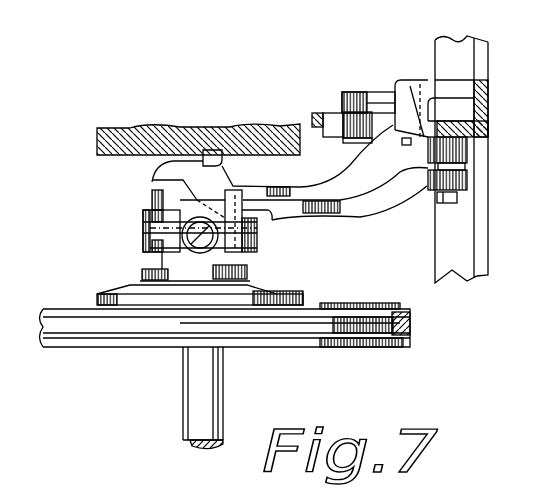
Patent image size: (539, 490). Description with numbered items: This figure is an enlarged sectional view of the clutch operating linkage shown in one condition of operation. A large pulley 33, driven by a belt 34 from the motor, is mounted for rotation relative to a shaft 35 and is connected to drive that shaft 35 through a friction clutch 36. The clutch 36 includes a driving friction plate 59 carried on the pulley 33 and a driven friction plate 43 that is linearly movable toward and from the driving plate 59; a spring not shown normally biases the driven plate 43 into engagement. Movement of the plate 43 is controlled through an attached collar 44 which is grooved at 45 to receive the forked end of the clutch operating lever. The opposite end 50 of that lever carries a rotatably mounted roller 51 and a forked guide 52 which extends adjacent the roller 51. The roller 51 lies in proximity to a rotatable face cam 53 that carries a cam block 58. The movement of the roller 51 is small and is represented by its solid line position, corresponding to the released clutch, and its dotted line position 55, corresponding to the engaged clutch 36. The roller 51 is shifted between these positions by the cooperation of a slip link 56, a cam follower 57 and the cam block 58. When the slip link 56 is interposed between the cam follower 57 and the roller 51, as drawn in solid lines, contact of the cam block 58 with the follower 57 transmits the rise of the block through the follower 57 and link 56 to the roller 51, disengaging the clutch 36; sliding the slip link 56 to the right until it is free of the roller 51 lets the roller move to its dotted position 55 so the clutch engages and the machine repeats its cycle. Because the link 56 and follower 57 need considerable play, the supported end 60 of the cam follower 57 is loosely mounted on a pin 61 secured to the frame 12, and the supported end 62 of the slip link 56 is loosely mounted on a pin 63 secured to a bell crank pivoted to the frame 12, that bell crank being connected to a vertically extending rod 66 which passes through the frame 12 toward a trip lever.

The frame 12 is at (507, 63).
The supported end of cam follower 60 is at (433, 108).
The pin 61 is at (403, 144).
The rod 66 is at (313, 116).
The face cam 53 is at (100, 157).
The cam block 58 is at (224, 158).
The cam follower 57 is at (294, 188).
The slip link 56 is at (390, 203).
The forked guide 52 is at (275, 221).
The supported end of slip link 62 is at (467, 183).
The pin 63 is at (458, 199).
The groove 45 is at (150, 220).
The collar 44 is at (142, 213).
The dotted line position 55 is at (150, 225).
The opposite end of clutch lever 50 is at (150, 236).
The roller 51 is at (170, 258).
The driven friction plate 43 is at (280, 286).
The friction clutch 36 is at (98, 292).
The driving friction plate 59 is at (313, 305).
The pulley 33 is at (333, 347).
The belt 34 is at (410, 323).
The shaft 35 is at (222, 406).